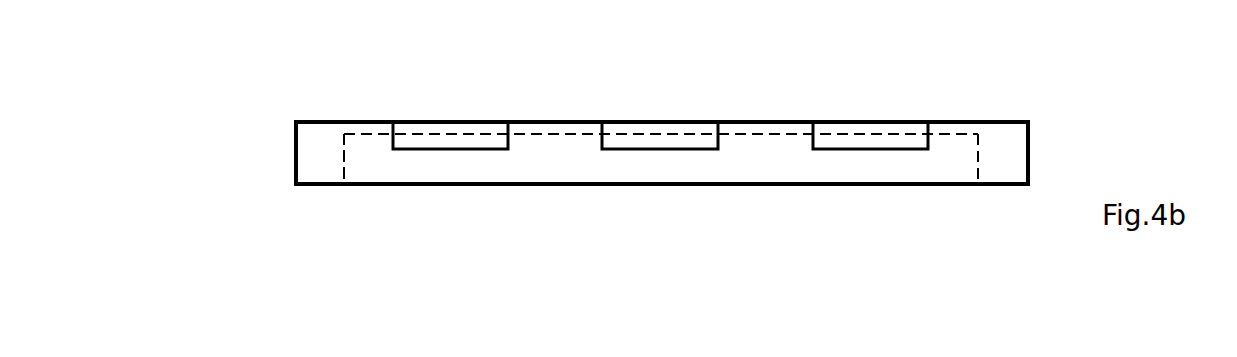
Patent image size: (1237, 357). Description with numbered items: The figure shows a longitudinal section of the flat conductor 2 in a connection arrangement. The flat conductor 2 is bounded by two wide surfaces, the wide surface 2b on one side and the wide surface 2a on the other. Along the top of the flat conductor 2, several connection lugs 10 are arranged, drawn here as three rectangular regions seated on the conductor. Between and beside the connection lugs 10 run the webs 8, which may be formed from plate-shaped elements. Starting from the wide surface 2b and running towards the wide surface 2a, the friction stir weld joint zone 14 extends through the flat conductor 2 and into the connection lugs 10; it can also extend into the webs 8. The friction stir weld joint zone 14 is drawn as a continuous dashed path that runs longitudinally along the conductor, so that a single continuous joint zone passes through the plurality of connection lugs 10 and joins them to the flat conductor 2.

The flat conductor 2 is at (1029, 148).
The wide surface 2a is at (958, 120).
The wide surface 2b is at (1000, 186).
The webs 8 is at (553, 130).
The connection lugs 10 is at (427, 130).
The friction stir weld joint zone 14 is at (375, 163).